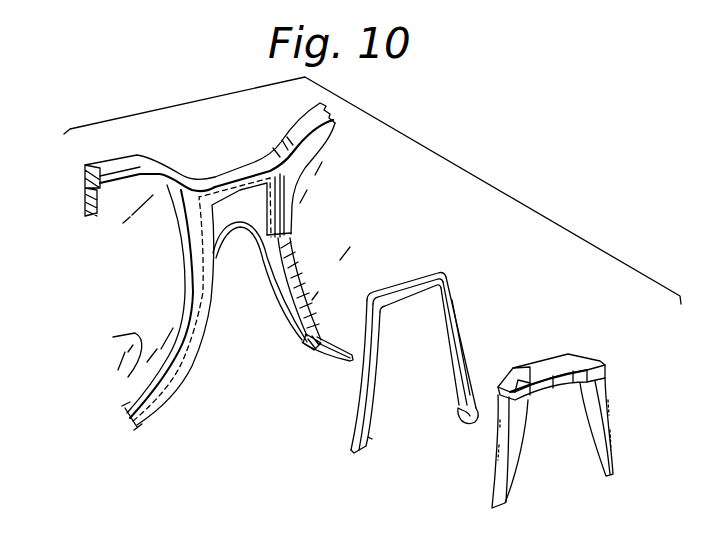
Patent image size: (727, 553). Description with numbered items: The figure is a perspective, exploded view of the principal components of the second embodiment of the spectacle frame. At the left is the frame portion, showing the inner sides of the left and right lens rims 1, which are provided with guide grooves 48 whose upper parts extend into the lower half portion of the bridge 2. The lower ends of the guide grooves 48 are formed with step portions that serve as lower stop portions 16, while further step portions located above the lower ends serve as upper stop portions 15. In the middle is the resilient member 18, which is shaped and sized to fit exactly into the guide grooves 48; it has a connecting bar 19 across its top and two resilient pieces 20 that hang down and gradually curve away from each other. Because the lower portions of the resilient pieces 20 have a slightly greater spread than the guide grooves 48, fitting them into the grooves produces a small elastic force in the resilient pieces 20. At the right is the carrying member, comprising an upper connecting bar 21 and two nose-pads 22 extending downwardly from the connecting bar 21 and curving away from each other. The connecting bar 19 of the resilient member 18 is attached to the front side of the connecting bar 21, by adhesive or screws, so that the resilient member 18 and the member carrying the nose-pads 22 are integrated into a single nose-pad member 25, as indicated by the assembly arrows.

The lens rim 1 is at (140, 157).
The bridge 2 is at (226, 170).
The guide groove 48 is at (270, 258).
The upper stop portion 15 is at (296, 316).
The lower stop portion 16 is at (303, 342).
The resilient member 18 is at (435, 332).
The connecting bar 19 is at (433, 272).
The resilient piece 20 is at (457, 333).
The connecting bar 21 is at (578, 353).
The nose-pad 22 is at (608, 403).
The nose-pad member 25 is at (480, 465).